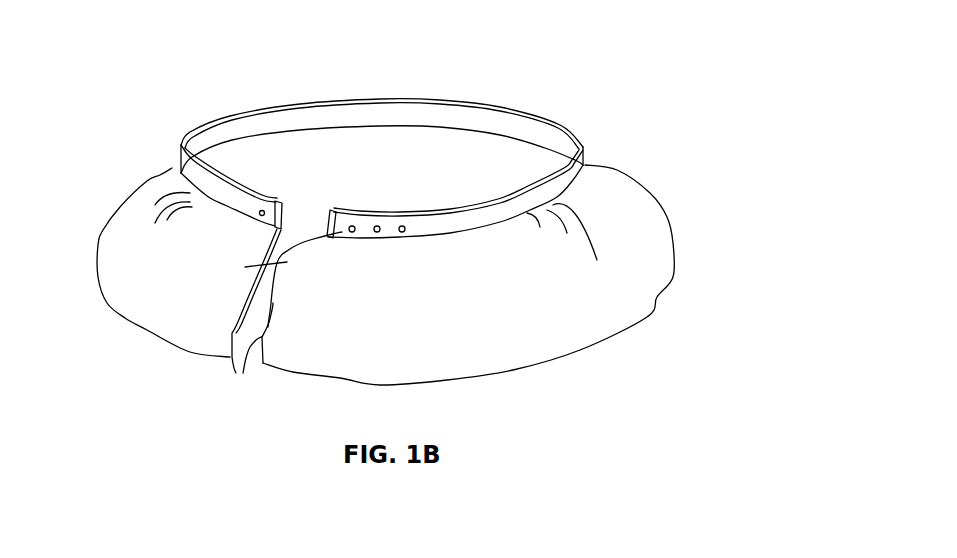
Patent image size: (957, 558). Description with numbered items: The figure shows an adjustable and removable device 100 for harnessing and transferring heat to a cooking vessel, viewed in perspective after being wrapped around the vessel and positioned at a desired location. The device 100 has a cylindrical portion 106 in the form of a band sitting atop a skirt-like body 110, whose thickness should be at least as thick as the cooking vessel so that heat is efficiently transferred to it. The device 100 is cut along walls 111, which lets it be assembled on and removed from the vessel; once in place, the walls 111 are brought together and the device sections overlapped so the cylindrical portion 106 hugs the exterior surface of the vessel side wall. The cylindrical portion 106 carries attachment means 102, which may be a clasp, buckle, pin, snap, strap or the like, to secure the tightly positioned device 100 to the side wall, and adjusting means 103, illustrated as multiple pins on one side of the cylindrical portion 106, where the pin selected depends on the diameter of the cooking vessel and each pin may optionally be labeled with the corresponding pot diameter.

The adjustable and removable device 100 is at (172, 55).
The attachment means 102 is at (264, 212).
The adjusting means 103 is at (407, 233).
The cylindrical portion 106 is at (483, 125).
The skirt-like body 110 is at (637, 223).
The walls 111 is at (254, 318).